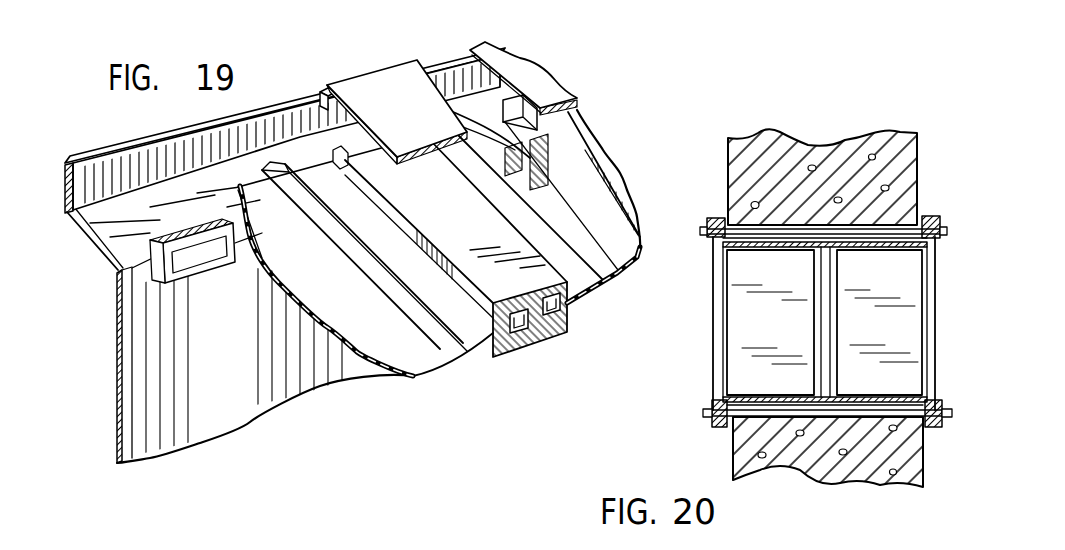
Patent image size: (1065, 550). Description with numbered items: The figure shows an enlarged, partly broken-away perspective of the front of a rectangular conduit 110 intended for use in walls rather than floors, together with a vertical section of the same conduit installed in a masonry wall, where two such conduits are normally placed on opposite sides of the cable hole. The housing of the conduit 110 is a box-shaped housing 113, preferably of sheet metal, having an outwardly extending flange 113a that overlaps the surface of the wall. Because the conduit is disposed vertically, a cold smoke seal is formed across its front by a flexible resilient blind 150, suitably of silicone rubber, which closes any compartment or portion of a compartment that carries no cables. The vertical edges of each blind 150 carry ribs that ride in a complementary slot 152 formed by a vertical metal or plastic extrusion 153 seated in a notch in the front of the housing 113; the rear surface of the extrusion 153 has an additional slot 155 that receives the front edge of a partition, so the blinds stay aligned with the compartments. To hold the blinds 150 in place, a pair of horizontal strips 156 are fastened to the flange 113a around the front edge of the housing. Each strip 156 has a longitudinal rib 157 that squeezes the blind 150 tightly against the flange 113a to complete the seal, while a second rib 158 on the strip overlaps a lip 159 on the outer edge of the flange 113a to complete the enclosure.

In FIG. 20, the rectangular conduit 110 is at (705, 318).
In FIG. 19, the box-shaped housing 113 is at (116, 378).
In FIG. 20, the box-shaped housing 113 is at (757, 247).
In FIG. 19, the outwardly extending flange 113a is at (90, 240).
In FIG. 19, the flexible resilient blind 150 is at (413, 382).
In FIG. 19, the slot 152 is at (520, 335).
In FIG. 19, the vertical extrusion 153 is at (552, 316).
In FIG. 19, the additional slot 155 is at (532, 340).
In FIG. 19, the horizontal strip 156 is at (365, 76).
In FIG. 19, the longitudinal rib 157 is at (560, 120).
In FIG. 19, the second rib 158 is at (320, 92).
In FIG. 19, the lip 159 is at (112, 152).